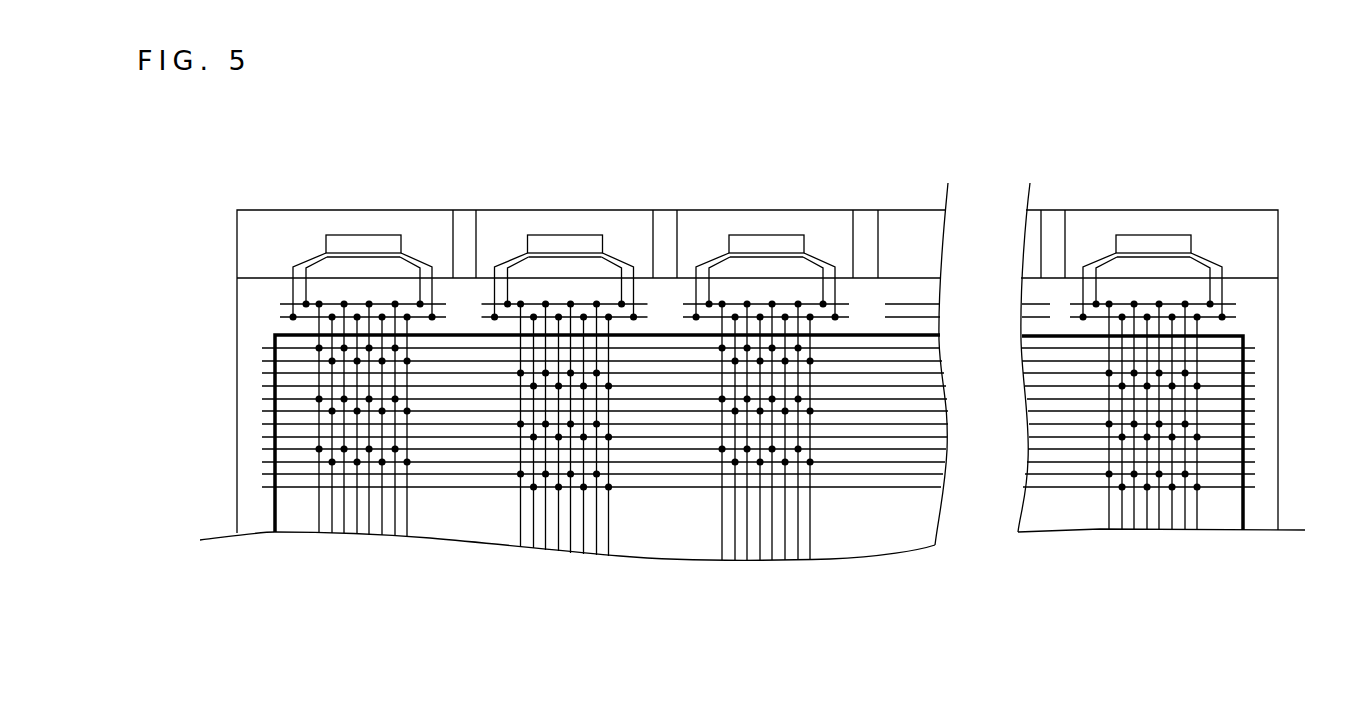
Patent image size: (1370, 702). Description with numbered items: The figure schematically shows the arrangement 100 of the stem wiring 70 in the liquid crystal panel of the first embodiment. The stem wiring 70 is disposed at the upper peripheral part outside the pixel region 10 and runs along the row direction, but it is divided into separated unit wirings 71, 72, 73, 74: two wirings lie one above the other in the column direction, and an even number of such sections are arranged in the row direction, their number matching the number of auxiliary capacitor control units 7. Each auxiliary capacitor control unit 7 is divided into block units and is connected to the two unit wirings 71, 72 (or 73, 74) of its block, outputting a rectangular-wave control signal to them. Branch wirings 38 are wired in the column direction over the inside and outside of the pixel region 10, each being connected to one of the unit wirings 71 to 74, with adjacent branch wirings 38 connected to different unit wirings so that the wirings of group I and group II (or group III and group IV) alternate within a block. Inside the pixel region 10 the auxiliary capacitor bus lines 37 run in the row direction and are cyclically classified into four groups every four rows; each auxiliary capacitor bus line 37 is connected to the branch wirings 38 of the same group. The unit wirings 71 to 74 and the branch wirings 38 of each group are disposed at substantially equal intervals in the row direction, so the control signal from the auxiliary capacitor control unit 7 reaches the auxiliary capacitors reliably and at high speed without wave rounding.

The light emitting device 100 is at (1232, 203).
The pixel region 10 is at (1243, 497).
The auxiliary capacitor control unit 7 is at (354, 235).
The auxiliary capacitor bus lines 37 is at (263, 359).
The branch wirings 38 is at (331, 520).
The stem wiring 70 is at (183, 265).
The unit wiring 71 is at (292, 305).
The unit wiring 72 is at (293, 318).
The unit wiring 73 is at (484, 305).
The unit wiring 74 is at (482, 322).